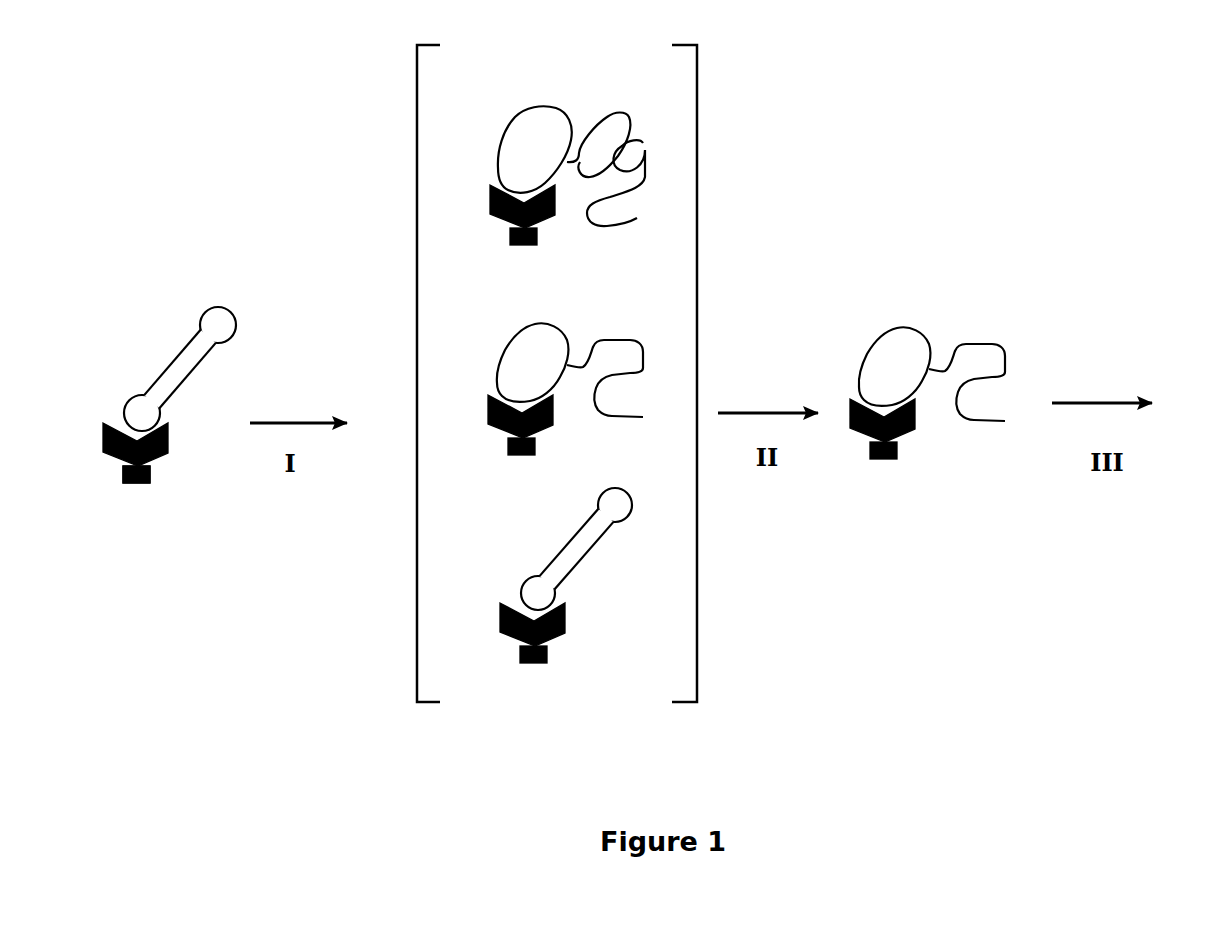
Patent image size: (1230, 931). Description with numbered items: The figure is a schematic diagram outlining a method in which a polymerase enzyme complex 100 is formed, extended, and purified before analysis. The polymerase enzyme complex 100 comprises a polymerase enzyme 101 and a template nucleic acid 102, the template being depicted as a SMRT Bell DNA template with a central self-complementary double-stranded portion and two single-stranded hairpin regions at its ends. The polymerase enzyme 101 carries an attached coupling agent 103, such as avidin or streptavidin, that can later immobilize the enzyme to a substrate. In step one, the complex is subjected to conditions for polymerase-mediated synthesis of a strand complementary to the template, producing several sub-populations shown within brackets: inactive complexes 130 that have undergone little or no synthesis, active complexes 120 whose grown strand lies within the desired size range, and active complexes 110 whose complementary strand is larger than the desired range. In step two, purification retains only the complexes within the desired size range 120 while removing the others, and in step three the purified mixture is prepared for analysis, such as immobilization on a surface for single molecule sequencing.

The polymerase enzyme complex 100 is at (197, 414).
The polymerase enzyme 101 is at (175, 461).
The template nucleic acid 102 is at (245, 311).
The coupling agent 103 is at (135, 494).
The active complexes that have grown complementary strand larger than the desired si 110 is at (672, 152).
The active complexes that have grown a nucleic acid strand within the desired size r 120 is at (655, 336).
The inactive complexes 130 is at (587, 597).